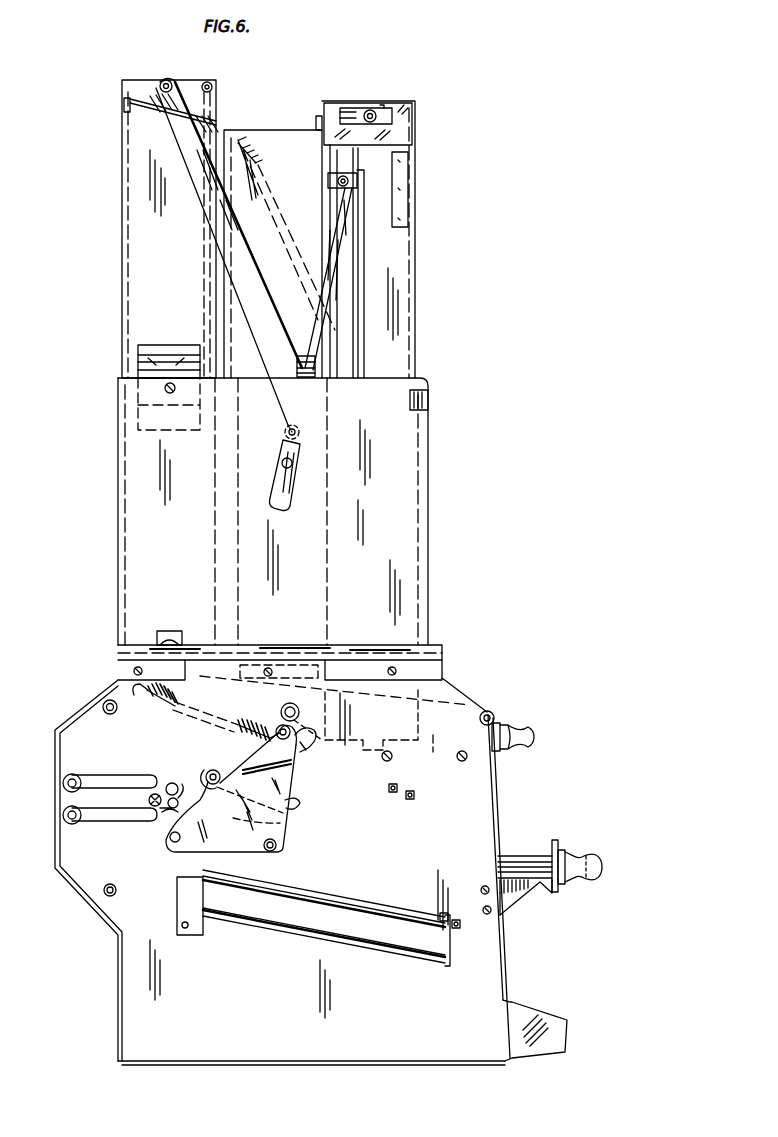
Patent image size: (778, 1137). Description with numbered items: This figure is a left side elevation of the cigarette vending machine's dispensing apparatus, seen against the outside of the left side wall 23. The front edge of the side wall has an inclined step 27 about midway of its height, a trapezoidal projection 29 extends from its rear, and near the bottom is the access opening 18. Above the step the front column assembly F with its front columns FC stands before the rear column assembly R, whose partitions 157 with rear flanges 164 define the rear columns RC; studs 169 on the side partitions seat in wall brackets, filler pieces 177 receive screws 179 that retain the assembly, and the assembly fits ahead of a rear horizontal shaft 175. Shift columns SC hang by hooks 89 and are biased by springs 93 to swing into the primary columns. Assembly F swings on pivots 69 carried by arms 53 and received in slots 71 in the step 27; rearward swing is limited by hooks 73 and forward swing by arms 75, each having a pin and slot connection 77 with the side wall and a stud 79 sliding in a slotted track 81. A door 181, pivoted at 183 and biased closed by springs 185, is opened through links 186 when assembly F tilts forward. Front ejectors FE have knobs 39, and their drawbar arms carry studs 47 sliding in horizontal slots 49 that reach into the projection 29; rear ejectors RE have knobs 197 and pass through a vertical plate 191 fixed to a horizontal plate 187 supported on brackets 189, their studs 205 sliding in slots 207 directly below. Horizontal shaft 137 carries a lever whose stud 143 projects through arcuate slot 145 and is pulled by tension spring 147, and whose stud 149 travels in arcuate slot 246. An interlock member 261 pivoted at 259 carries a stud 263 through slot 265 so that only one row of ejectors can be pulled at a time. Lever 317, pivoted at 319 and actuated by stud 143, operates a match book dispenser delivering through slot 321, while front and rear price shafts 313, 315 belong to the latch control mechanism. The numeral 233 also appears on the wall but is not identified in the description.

The access opening 18 is at (535, 1008).
The left side wall 23 is at (405, 574).
The inclined step 27 is at (442, 680).
The trapezoidal projection 29 is at (65, 734).
The knob 39 is at (516, 750).
The stud 47 is at (63, 782).
The horizontal slot 49 is at (98, 776).
The arms 53 is at (447, 763).
The pivots 69 is at (492, 713).
The slots 71 is at (480, 706).
The hooks 73 is at (428, 396).
The arms 75 is at (335, 228).
The pin and slot connection 77 is at (282, 463).
The stud 79 is at (329, 183).
The slotted track 81 is at (355, 315).
The hook 89 is at (318, 120).
The springs 93 is at (252, 146).
The horizontal shaft 137 is at (293, 703).
The stud 143 is at (276, 740).
The arcuate slot 145 is at (310, 747).
The tension spring 147 is at (152, 705).
The stud 149 is at (211, 768).
The partitions 157 is at (145, 252).
The rear flange 164 is at (126, 233).
The studs 169 is at (168, 631).
The horizontal shaft 175 is at (106, 702).
The filler pieces 177 is at (140, 362).
The screws 179 is at (165, 388).
The door 181 is at (216, 104).
The pivot 183 is at (210, 82).
The springs 185 is at (135, 120).
The links 186 is at (240, 292).
The horizontal plate 187 is at (540, 882).
The brackets 189 is at (520, 905).
The vertical plate 191 is at (555, 840).
The knob 197 is at (588, 872).
The stud 205 is at (63, 817).
The horizontal slot 207 is at (96, 824).
The hole 233 is at (116, 890).
The arcuate slots 246 is at (300, 802).
The pivot 259 is at (148, 800).
The clip 261 is at (166, 812).
The stud 263 is at (176, 798).
The slot 265 is at (168, 783).
The front price shaft 313 is at (416, 796).
The rear price shaft 315 is at (392, 794).
The lever 317 is at (210, 846).
The pivot 319 is at (278, 847).
The slot 321 is at (330, 928).
The rear column assembly R is at (110, 90).
The rear columns RC is at (130, 210).
The shift column SC is at (292, 130).
The front column assembly F is at (426, 111).
The front columns FC is at (405, 263).
The front column ejectors FE is at (536, 730).
The rear column ejectors RE is at (609, 859).